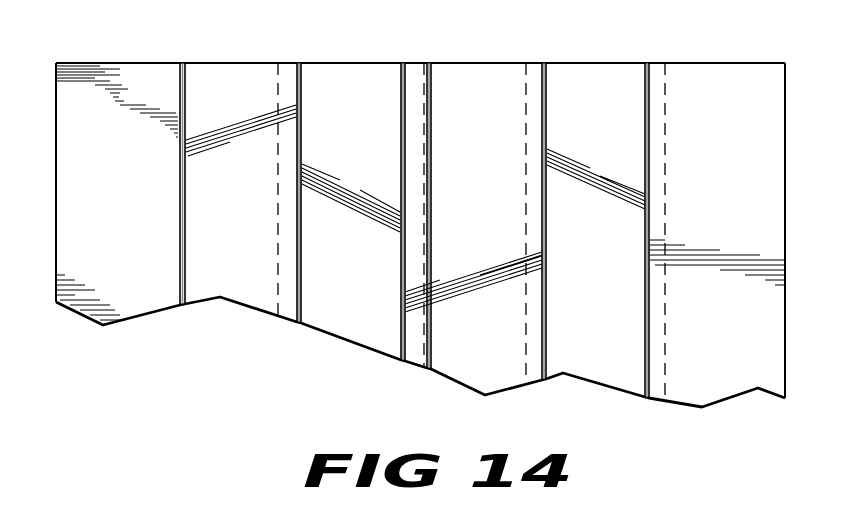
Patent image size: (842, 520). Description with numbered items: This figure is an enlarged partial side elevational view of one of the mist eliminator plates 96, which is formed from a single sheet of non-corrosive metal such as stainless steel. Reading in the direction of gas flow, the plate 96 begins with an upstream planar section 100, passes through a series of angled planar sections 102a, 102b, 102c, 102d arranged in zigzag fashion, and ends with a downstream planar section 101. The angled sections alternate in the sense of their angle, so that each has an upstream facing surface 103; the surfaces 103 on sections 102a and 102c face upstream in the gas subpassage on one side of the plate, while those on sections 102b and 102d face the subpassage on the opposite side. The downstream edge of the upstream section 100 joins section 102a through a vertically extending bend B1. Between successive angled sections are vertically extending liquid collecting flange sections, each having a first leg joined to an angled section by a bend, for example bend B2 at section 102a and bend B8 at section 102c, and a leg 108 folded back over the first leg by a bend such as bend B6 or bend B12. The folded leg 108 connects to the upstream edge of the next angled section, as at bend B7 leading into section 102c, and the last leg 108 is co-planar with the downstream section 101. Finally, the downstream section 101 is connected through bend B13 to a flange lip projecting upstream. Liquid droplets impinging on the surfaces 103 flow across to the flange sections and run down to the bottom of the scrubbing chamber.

The upstream planar section 100 is at (150, 46).
The mist eliminator plate 96 is at (208, 60).
The angled planar section 102a is at (253, 70).
The angled planar section 102b is at (387, 50).
The angled planar section 102c is at (460, 72).
The angled planar section 102d is at (617, 68).
The leg 108 is at (414, 67).
The downstream planar section 101 is at (731, 68).
The upstream facing surface 103 is at (358, 288).
The vertically extending bend B1 is at (186, 87).
The vertically extending bend B2 is at (302, 87).
The bend B6 is at (400, 101).
The bend B7 is at (432, 99).
The vertically extending bend B8 is at (547, 91).
The bend B12 is at (644, 115).
The vertically extending bend B13 is at (784, 112).